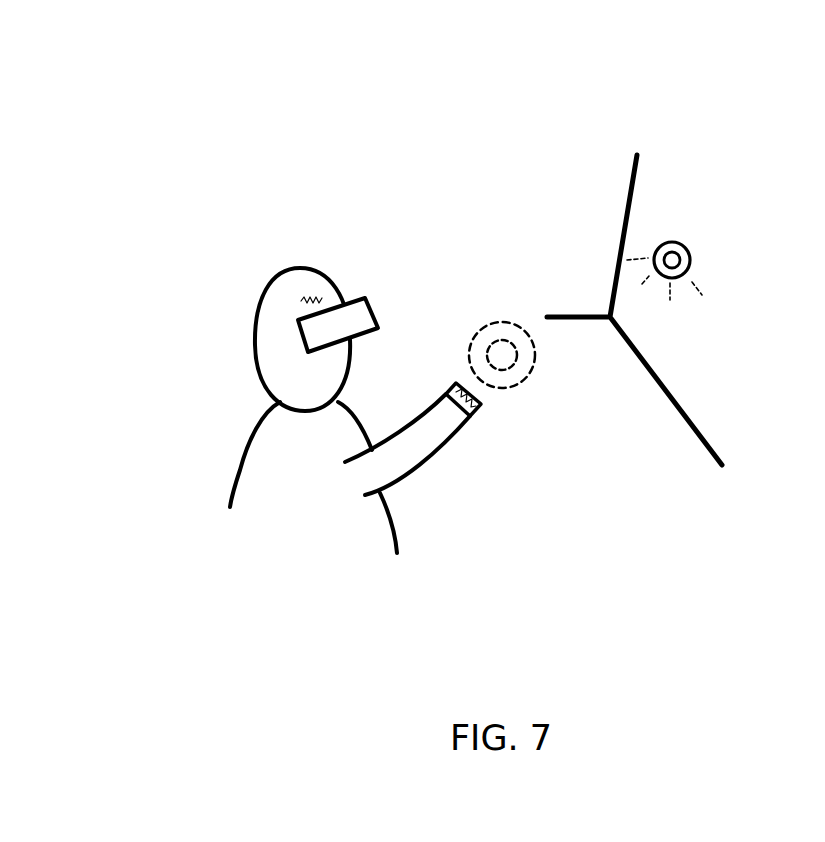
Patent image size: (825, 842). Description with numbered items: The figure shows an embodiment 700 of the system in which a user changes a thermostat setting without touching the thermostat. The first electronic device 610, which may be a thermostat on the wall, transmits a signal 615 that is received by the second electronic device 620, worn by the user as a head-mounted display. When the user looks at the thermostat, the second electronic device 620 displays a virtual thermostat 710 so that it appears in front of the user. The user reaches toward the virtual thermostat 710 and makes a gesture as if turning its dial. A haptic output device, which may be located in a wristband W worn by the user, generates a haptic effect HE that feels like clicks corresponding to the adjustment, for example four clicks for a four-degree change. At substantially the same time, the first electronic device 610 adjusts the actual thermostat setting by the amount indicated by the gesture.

The embodiment 700 is at (188, 100).
The second electronic device 620 is at (363, 292).
The haptic effect HE is at (292, 292).
The wristband W is at (442, 385).
The virtual thermostat 710 is at (528, 400).
The first electronic device 610 is at (681, 240).
The signal 615 is at (686, 312).